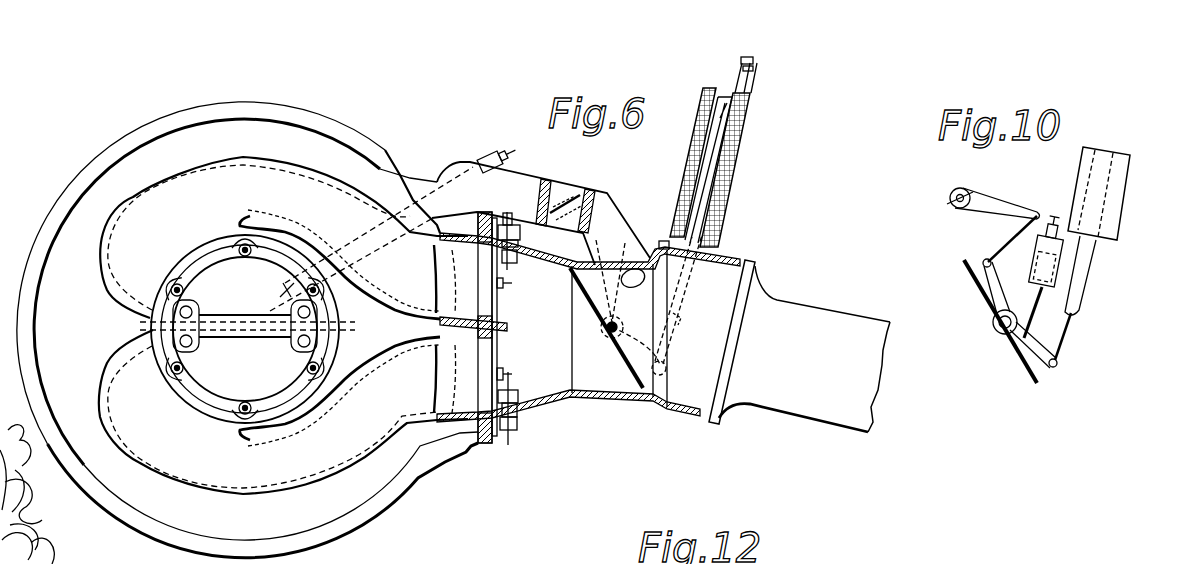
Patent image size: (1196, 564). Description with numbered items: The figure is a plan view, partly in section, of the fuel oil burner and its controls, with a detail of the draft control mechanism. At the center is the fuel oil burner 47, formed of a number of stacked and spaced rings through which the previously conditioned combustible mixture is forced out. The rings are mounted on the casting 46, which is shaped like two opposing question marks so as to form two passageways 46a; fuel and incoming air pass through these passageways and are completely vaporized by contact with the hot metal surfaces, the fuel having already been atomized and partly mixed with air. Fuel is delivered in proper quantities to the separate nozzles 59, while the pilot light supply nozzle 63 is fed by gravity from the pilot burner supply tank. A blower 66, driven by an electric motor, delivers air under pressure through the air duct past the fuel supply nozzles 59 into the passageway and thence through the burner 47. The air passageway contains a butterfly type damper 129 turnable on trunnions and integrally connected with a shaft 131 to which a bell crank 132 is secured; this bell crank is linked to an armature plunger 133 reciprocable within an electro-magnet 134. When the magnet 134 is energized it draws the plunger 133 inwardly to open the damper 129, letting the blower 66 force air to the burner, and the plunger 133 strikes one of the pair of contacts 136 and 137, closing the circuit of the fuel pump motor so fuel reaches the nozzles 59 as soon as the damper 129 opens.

In FIG. 6, the outer casing 46 is at (153, 158).
In FIG. 6, the inner chamber lobes 46a is at (282, 185).
In FIG. 6, the fuel oil burner 47 is at (216, 264).
In FIG. 6, the pilot light supply nozzle 63 is at (400, 218).
In FIG. 6, the separate nozzles 59 is at (503, 285).
In FIG. 6, the butterfly damper 129 is at (627, 357).
In FIG. 10, the butterfly damper 129 is at (1027, 368).
In FIG. 6, the shaft 131 is at (616, 322).
In FIG. 10, the shaft 131 is at (1000, 334).
In FIG. 6, the bell crank 132 is at (662, 358).
In FIG. 10, the bell crank 132 is at (1050, 368).
In FIG. 6, the armature plunger 133 is at (697, 213).
In FIG. 10, the armature plunger 133 is at (1082, 265).
In FIG. 6, the electro-magnet 134 is at (738, 155).
In FIG. 10, the electro-magnet 134 is at (1115, 208).
In FIG. 6, the contact 136 is at (740, 67).
In FIG. 6, the contact 137 is at (758, 73).
In FIG. 6, the blower 66 is at (833, 323).